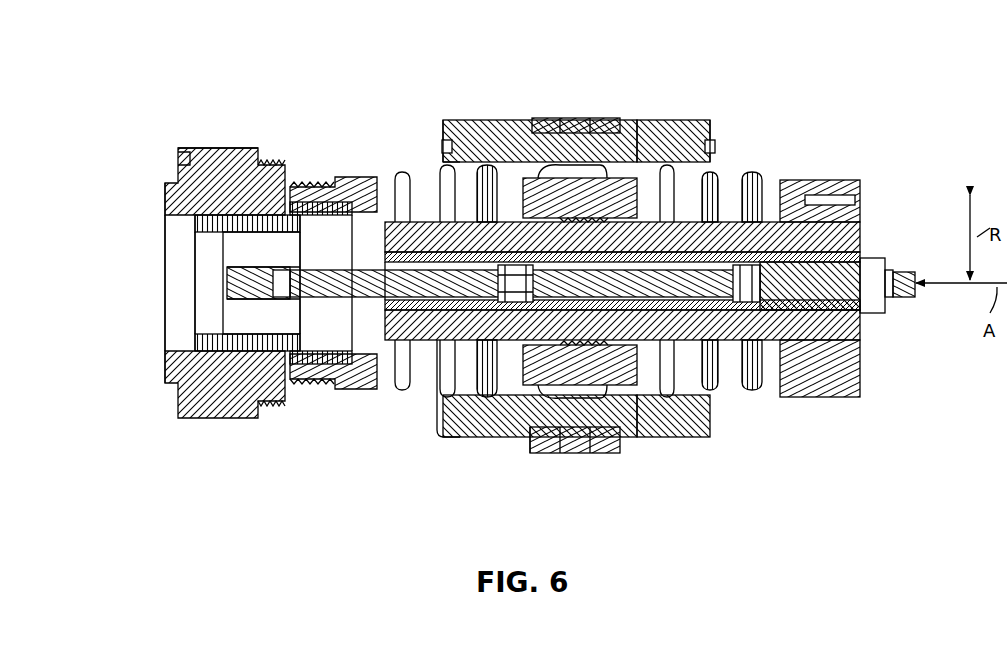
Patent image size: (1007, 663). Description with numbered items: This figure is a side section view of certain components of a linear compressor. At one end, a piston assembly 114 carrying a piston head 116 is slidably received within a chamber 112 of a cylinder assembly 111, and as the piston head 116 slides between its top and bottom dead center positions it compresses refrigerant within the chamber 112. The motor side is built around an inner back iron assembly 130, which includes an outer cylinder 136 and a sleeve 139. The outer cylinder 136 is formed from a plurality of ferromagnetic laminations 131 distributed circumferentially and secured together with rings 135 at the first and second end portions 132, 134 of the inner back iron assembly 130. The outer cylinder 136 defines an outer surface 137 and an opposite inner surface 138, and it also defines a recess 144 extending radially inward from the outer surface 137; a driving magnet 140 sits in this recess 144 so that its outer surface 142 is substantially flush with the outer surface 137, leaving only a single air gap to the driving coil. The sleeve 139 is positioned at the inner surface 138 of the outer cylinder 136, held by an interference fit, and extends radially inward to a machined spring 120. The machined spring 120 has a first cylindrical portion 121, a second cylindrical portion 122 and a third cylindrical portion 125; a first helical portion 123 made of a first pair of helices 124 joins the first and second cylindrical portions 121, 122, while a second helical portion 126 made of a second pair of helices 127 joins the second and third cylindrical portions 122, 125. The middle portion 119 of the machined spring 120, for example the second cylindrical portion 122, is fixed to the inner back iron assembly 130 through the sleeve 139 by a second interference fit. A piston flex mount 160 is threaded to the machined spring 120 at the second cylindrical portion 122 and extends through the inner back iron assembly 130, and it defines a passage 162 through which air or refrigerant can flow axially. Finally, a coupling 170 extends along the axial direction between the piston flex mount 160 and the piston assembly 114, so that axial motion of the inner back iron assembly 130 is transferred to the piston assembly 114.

The cylinder assembly 111 is at (215, 400).
The chamber 112 is at (176, 289).
The piston assembly 114 is at (207, 212).
The piston head 116 is at (200, 262).
The middle portion 119 is at (573, 250).
The machined spring 120 is at (798, 180).
The first cylindrical portion 121 is at (815, 388).
The second cylindrical portion 122 is at (490, 388).
The first helical portion 123 is at (745, 388).
The first pair of helices 124 is at (708, 205).
The third cylindrical portion 125 is at (358, 392).
The second helical portion 126 is at (403, 388).
The second pair of helices 127 is at (530, 366).
The inner back iron assembly 130 is at (684, 443).
The laminations 131 is at (480, 120).
The first end portion 132 is at (712, 120).
The second end portion 134 is at (441, 120).
The rings 135 is at (395, 130).
The outer cylinder 136 is at (440, 128).
The outer surface 137 is at (664, 120).
The inner surface 138 is at (634, 178).
The sleeve 139 is at (512, 120).
The driving magnet 140 is at (585, 118).
The outer surface 142 is at (549, 116).
The recess 144 is at (521, 438).
The piston flex mount 160 is at (847, 273).
The passage 162 is at (843, 232).
The coupling 170 is at (308, 362).